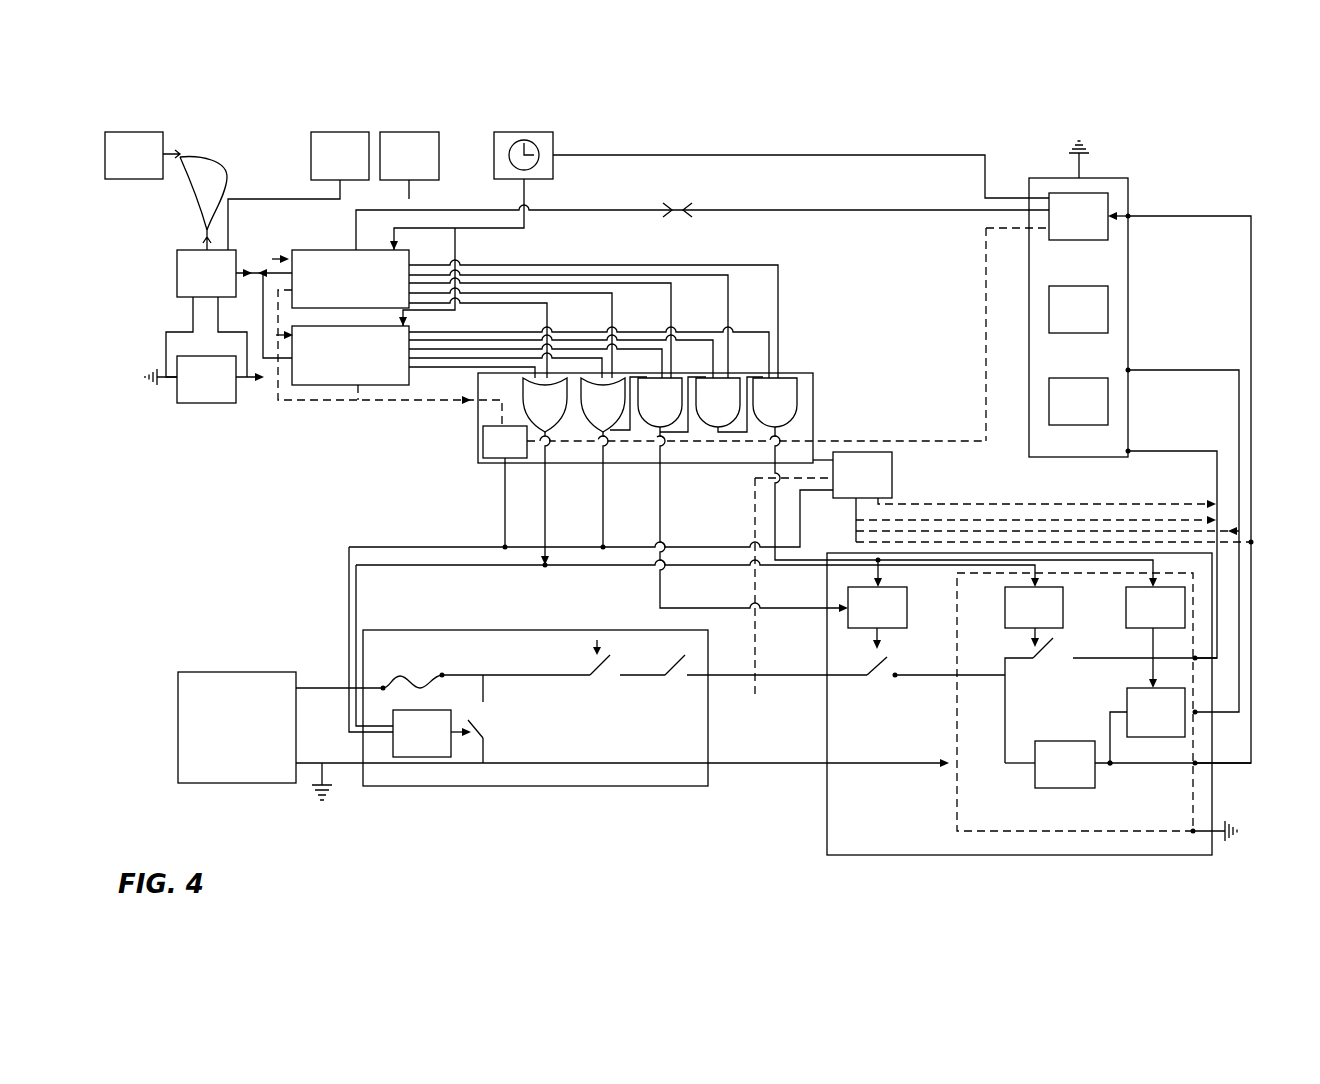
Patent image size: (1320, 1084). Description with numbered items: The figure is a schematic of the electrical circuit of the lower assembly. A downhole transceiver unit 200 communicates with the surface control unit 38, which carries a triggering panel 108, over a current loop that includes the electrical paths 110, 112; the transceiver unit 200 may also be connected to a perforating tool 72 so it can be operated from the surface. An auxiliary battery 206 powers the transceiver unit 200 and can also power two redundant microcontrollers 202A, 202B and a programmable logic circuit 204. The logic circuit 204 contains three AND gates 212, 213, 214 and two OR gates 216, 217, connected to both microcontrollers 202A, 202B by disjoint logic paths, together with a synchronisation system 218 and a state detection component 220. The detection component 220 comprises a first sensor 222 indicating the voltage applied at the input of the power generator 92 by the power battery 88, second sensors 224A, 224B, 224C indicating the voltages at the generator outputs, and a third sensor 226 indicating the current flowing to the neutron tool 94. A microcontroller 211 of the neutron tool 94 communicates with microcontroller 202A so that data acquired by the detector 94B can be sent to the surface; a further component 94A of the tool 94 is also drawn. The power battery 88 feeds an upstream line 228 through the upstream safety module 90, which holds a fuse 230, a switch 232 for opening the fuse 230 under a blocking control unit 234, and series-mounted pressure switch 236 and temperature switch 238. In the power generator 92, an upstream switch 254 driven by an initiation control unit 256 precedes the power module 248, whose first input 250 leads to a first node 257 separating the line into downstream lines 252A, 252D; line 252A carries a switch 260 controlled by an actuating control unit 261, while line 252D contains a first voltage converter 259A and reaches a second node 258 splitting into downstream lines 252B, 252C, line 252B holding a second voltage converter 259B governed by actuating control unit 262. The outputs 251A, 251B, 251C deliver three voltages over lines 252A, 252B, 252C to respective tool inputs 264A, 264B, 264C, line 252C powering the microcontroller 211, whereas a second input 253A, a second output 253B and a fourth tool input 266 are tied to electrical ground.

The surface control unit 38 is at (142, 155).
The electrical path 110 is at (193, 190).
The electrical path 112 is at (227, 177).
The triggering panel 108 is at (340, 156).
The perforating tool 72 is at (409, 156).
The downhole transceiver unit 200 is at (206, 273).
The auxiliary battery 206 is at (206, 379).
The microcontroller 202A is at (350, 279).
The microcontroller 202B is at (350, 355).
The programmable logic circuit 204 is at (815, 391).
The OR logic gate 217 is at (545, 405).
The OR logic gate 216 is at (603, 405).
The AND logic gate 214 is at (660, 402).
The AND logic gate 213 is at (718, 402).
The AND logic gate 212 is at (775, 402).
The synchronisation system 218 is at (505, 442).
The state detection component 220 is at (862, 475).
The fourth input 266 is at (1072, 165).
The neutron tool 94 is at (1134, 188).
The microcontroller of the neutron tool 211 is at (1078, 216).
The detector 94B is at (1078, 309).
The battery cell 94A is at (1078, 401).
The downstream line 252C is at (1172, 216).
The input of the neutron tool 264C is at (1129, 218).
The downstream line 252B is at (1190, 346).
The input of the neutron tool 264B is at (1129, 372).
The downstream line 252A is at (1165, 451).
The input of the neutron tool 264A is at (1129, 455).
The third sensor 226 is at (1214, 502).
The second sensor 224A is at (1234, 519).
The second sensor 224B is at (1243, 531).
The second sensor 224C is at (1253, 543).
The upstream electrical line 228 is at (328, 688).
The fuse 230 is at (423, 678).
The first mechanical switch 236 is at (604, 681).
The second mechanical switch 238 is at (680, 681).
The first sensor 222 is at (782, 601).
The blocking control unit 234 is at (422, 733).
The switch 232 is at (492, 721).
The power battery 88 is at (237, 727).
The upstream safety module 90 is at (661, 801).
The initiation control unit 256 is at (877, 607).
The actuating control unit 261 is at (1034, 607).
The actuating control unit 262 is at (1155, 607).
The upstream switch 254 is at (882, 686).
The first input 250 is at (953, 678).
The first node 257 is at (1006, 677).
The switch 260 is at (1054, 664).
The first output 251A is at (1198, 660).
The first output 251B is at (1198, 713).
The second voltage converter 259B is at (1137, 739).
The downstream line 252D is at (1020, 766).
The second node 258 is at (1111, 766).
The first output 251C is at (1198, 766).
The second input 253A is at (944, 766).
The first voltage converter 259A is at (1062, 794).
The power module 248 is at (1008, 834).
The power generator 92 is at (861, 860).
The second output 253B is at (1214, 836).